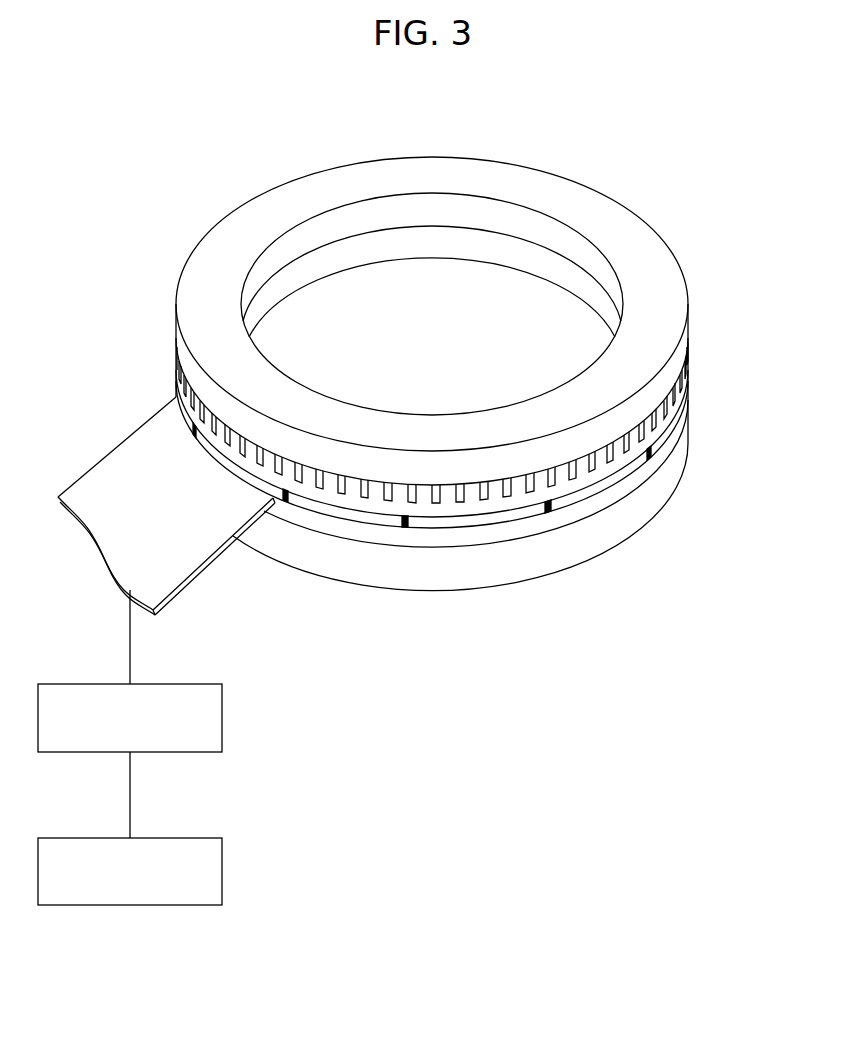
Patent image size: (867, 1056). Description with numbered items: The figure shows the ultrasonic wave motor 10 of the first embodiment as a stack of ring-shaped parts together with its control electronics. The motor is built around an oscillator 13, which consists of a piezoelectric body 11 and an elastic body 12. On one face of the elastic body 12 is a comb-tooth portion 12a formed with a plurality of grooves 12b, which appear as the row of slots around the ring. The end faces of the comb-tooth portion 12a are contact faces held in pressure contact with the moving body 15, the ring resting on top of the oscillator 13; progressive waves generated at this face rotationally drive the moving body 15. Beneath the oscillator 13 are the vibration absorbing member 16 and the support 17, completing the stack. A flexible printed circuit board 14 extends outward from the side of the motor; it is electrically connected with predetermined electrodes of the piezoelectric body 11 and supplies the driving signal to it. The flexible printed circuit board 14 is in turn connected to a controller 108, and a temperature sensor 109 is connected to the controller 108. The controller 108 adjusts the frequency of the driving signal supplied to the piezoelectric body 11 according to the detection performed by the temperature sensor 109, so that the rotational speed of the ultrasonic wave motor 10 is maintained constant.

The ultrasonic wave motor 10 is at (592, 121).
The piezoelectric body 11 is at (740, 390).
The elastic body 12 is at (683, 392).
The comb-tooth portion 12a is at (455, 500).
The grooves 12b is at (467, 497).
The oscillator 13 is at (479, 485).
The flexible printed circuit board 14 is at (102, 540).
The moving body 15 is at (640, 247).
The vibration absorbing member 16 is at (627, 485).
The support 17 is at (603, 535).
The controller 108 is at (222, 718).
The temperature sensor 109 is at (222, 871).